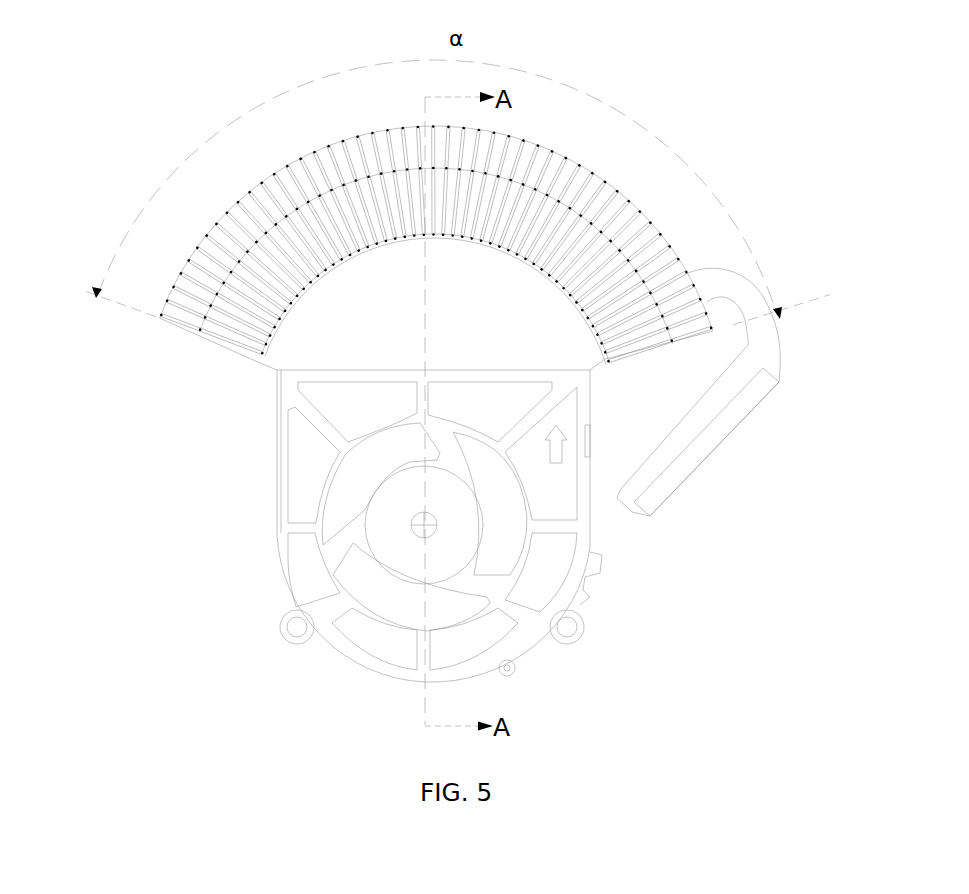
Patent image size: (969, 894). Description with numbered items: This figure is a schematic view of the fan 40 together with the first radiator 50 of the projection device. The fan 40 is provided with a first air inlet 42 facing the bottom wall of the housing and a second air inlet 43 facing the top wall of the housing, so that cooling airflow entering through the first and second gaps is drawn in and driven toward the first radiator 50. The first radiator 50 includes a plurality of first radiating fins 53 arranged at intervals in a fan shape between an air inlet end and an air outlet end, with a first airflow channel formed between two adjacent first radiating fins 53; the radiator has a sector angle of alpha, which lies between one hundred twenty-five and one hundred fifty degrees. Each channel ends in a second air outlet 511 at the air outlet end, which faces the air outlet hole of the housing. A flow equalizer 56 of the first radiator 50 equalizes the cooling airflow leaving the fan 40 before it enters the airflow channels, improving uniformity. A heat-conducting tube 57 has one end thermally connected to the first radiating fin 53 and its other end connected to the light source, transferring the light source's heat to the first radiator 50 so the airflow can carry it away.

The fan 40 is at (276, 445).
The first air inlet 42 is at (319, 527).
The second air inlet 43 is at (325, 553).
The first radiator 50 is at (168, 338).
The second air outlet 511 is at (224, 236).
The first radiating fins 53 is at (157, 310).
The flow equalizer 56 is at (288, 354).
The heat-conducting tube 57 is at (760, 348).